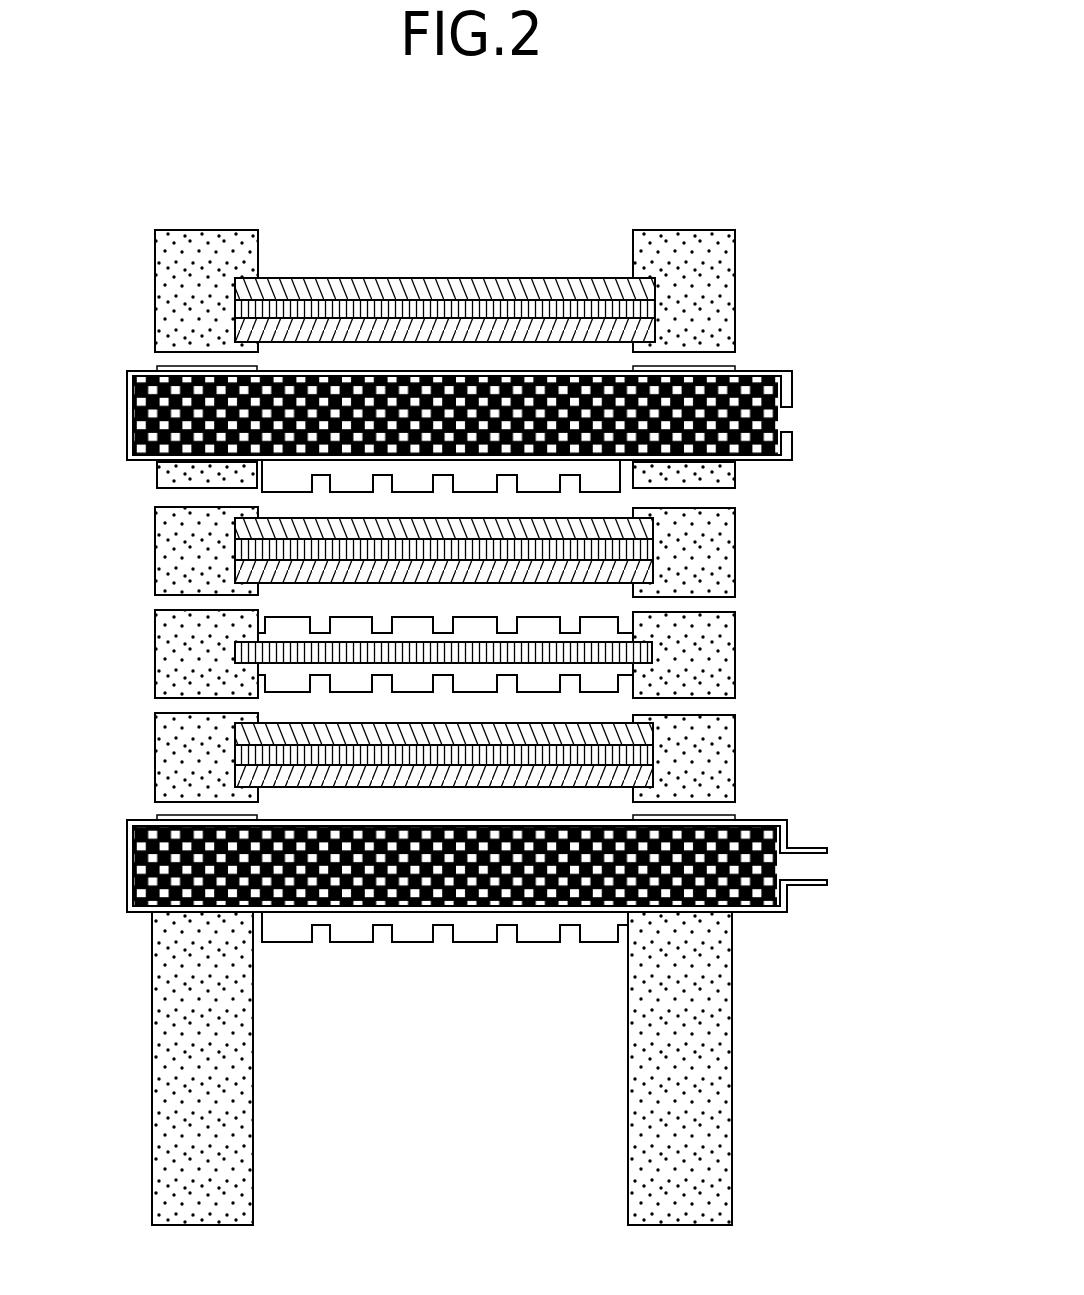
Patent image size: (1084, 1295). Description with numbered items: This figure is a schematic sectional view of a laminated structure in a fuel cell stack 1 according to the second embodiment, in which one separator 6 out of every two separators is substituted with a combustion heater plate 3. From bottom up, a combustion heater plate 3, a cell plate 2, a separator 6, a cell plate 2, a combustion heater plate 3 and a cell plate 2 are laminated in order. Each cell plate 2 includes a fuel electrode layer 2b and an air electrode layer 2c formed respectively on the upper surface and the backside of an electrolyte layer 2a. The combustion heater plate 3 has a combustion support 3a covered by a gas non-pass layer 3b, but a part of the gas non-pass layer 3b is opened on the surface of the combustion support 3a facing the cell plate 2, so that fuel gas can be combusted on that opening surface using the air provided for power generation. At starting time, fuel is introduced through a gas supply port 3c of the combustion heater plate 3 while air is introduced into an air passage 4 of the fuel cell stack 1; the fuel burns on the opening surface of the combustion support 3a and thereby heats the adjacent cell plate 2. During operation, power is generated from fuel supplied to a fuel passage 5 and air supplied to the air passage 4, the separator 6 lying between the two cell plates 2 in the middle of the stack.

The fuel cell stack 1 is at (624, 198).
The cell plate 2 is at (550, 484).
The electrolyte layer 2a is at (643, 313).
The fuel electrode layer 2b is at (653, 293).
The air electrode layer 2c is at (521, 306).
The combustion heater plate 3 is at (509, 612).
The combustion support 3a is at (767, 417).
The gas non-pass layer 3b is at (605, 368).
The gas supply port 3c is at (798, 868).
The air passage 4 is at (500, 358).
The fuel passage 5 is at (305, 510).
The separator 6 is at (652, 656).